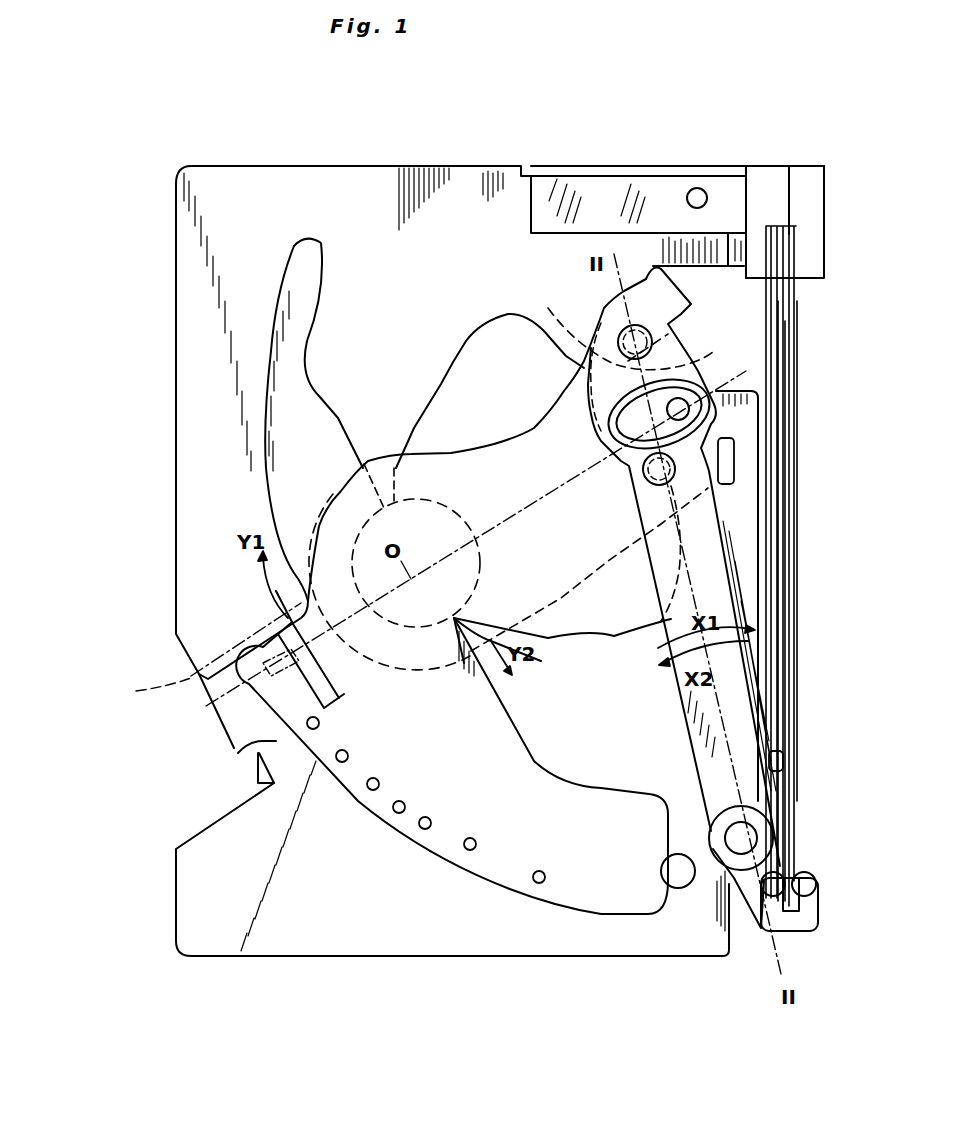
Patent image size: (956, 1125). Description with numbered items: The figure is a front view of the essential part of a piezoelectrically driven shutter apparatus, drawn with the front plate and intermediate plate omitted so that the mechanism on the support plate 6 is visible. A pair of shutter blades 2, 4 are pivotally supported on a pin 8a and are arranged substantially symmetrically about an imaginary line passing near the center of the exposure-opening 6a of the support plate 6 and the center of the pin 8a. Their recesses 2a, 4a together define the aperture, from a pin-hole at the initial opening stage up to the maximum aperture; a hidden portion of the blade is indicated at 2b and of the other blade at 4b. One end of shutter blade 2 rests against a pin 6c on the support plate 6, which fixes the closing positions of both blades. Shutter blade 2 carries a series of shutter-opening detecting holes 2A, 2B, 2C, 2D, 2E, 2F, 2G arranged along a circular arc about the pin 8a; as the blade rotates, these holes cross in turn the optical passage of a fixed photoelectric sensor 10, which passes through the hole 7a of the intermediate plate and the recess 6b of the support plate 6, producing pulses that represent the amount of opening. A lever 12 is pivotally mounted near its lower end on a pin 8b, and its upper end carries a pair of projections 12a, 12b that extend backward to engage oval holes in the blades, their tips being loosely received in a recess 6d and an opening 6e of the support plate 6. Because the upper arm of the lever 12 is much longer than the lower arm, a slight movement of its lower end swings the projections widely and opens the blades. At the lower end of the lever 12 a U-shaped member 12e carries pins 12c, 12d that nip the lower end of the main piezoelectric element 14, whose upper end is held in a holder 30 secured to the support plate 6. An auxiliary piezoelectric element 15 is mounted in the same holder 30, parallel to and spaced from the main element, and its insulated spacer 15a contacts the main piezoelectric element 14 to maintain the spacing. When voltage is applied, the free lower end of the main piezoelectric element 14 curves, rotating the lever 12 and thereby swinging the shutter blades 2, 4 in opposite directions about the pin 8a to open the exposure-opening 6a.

The shutter blade 2 is at (483, 878).
The shutter-opening detecting hole 2A is at (322, 716).
The shutter-opening detecting hole 2B is at (348, 752).
The shutter-opening detecting hole 2C is at (380, 780).
The shutter-opening detecting hole 2D is at (405, 804).
The shutter-opening detecting hole 2E is at (432, 820).
The shutter-opening detecting hole 2F is at (477, 840).
The shutter-opening detecting hole 2G is at (545, 870).
The recess 2a is at (503, 703).
The hidden arm portion 2b is at (566, 322).
The shutter blade 4 is at (314, 259).
The recess 4a is at (395, 467).
The cam arm 4b is at (717, 497).
The support plate 6 is at (385, 956).
The exposure-opening 6a is at (332, 493).
The recess 6b is at (237, 753).
The pin 6c is at (678, 858).
The recess 6d is at (740, 304).
The opening 6e is at (735, 462).
The hole 7a is at (212, 712).
The pin 8a is at (689, 409).
The pin 8b is at (757, 833).
The photoelectric sensor 10 is at (150, 691).
The lever 12 is at (677, 682).
The projection 12a is at (653, 340).
The projection 12b is at (633, 477).
The pin 12c is at (755, 905).
The pin 12d is at (810, 878).
The U-shaped member 12e is at (607, 425).
The main piezoelectric element 14 is at (797, 490).
The auxiliary piezoelectric element 15 is at (772, 225).
The insulated spacer 15a is at (782, 760).
The holder 30 is at (735, 165).